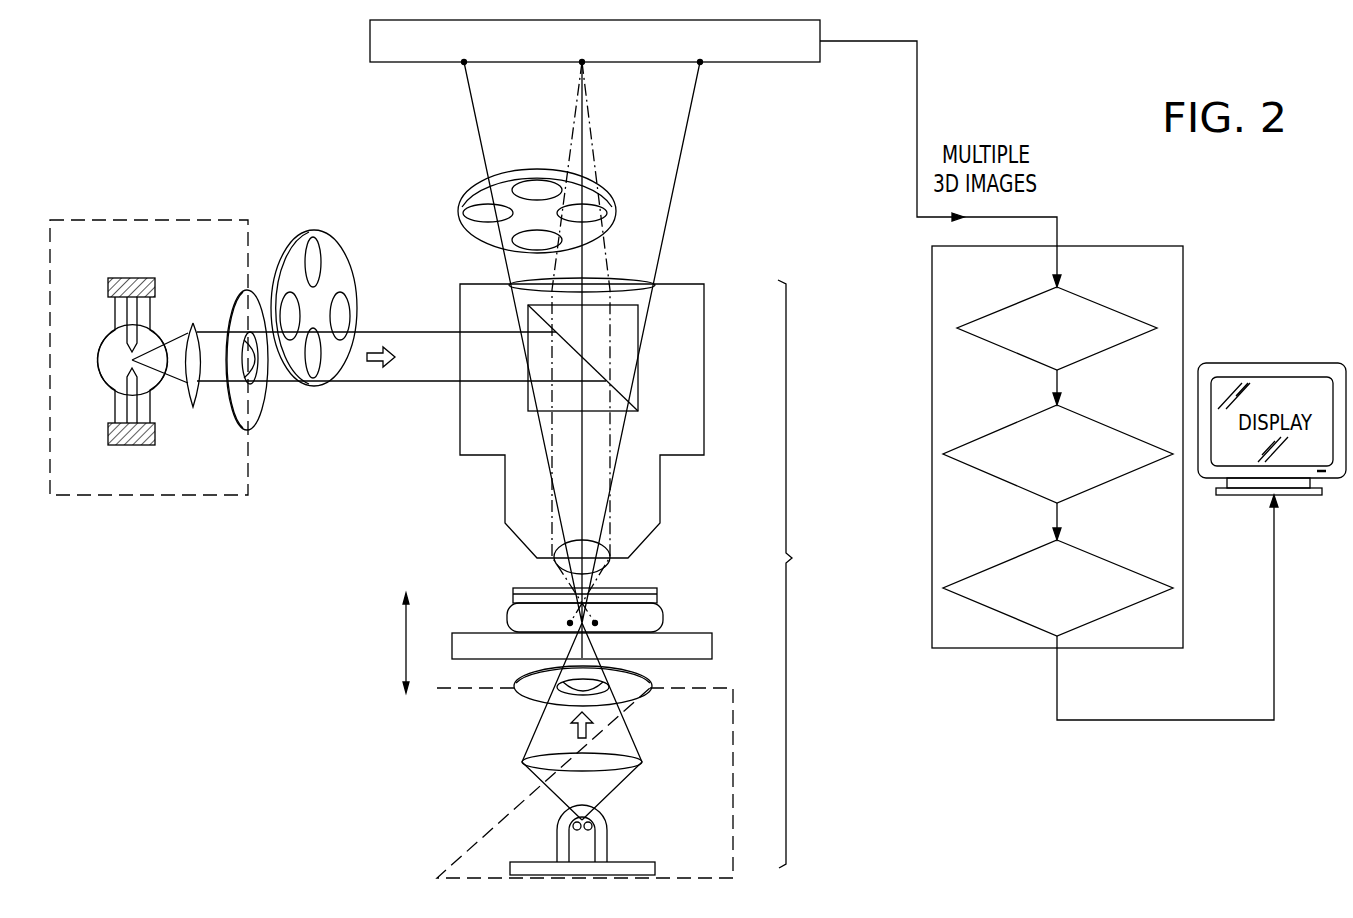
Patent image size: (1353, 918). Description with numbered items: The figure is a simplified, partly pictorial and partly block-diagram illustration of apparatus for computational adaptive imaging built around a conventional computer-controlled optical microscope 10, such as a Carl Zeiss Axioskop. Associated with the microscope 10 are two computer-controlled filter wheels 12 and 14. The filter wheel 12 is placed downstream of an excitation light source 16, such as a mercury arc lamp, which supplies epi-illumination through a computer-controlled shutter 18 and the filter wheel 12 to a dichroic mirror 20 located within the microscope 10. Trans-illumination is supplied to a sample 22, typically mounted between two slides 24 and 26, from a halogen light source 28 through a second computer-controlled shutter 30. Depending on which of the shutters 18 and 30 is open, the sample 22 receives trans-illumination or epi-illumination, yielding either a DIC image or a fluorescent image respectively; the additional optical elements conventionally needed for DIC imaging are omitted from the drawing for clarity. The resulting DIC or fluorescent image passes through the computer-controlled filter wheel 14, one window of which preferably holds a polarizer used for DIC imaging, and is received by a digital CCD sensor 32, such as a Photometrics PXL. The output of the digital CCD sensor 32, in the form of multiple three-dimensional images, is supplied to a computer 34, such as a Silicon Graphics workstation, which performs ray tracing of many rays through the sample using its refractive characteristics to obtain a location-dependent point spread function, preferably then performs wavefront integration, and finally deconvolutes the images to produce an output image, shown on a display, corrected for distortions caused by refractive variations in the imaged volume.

The computer-controlled optical microscope 10 is at (804, 574).
The filter wheel 12 is at (300, 232).
The filter wheel 14 is at (473, 232).
The excitation light source 16 is at (143, 220).
The computer-controlled shutter 18 is at (240, 313).
The dichroic mirror 20 is at (632, 372).
The sample 22 is at (657, 620).
The slide 24 is at (707, 648).
The slide 26 is at (650, 593).
The halogen light source 28 is at (733, 813).
The computer-controlled shutter 30 is at (638, 693).
The digital CCD sensor 32 is at (418, 57).
The computer 34 is at (932, 365).